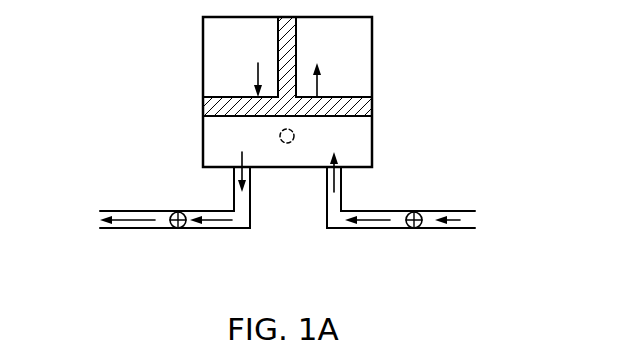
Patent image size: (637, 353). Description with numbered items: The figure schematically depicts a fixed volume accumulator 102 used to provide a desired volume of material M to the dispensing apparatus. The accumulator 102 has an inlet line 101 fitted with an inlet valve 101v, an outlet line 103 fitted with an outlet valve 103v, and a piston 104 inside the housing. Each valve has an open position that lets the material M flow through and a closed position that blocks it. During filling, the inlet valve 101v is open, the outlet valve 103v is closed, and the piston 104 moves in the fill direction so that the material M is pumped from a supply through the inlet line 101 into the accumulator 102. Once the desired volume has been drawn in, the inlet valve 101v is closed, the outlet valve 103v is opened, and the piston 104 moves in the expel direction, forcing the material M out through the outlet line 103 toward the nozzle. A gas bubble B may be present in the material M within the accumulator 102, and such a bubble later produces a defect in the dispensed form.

The fixed volume accumulator 102 is at (378, 52).
The piston 104 is at (220, 97).
The gas bubble B is at (277, 135).
The material M is at (362, 137).
The outlet line 103 is at (137, 212).
The outlet valve 103v is at (178, 228).
The inlet line 101 is at (455, 211).
The inlet valve 101v is at (414, 228).